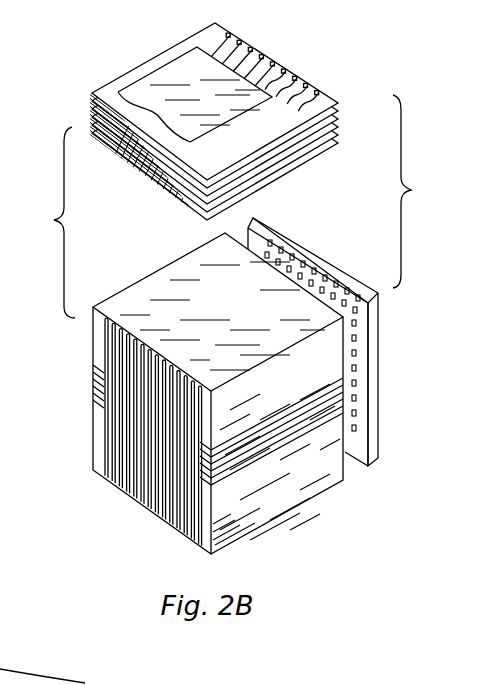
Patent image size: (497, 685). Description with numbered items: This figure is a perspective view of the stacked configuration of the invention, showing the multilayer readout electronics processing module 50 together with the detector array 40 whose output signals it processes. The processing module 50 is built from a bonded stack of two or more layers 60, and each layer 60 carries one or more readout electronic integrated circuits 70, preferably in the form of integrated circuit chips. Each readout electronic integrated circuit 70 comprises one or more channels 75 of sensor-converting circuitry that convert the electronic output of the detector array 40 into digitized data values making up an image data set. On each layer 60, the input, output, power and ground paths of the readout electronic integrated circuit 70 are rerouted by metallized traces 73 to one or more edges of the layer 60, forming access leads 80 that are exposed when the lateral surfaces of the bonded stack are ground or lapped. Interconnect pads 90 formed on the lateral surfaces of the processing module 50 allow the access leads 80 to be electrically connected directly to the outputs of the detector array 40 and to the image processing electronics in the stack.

The detector array 40 is at (328, 269).
The multilayer readout electronics processing module 50 is at (271, 516).
The layers 60 is at (342, 104).
The readout electronic integrated circuit 70 is at (180, 74).
The metallized traces 73 is at (114, 97).
The channels 75 is at (296, 63).
The access leads 80 is at (236, 34).
The interconnect pads 90 is at (144, 492).